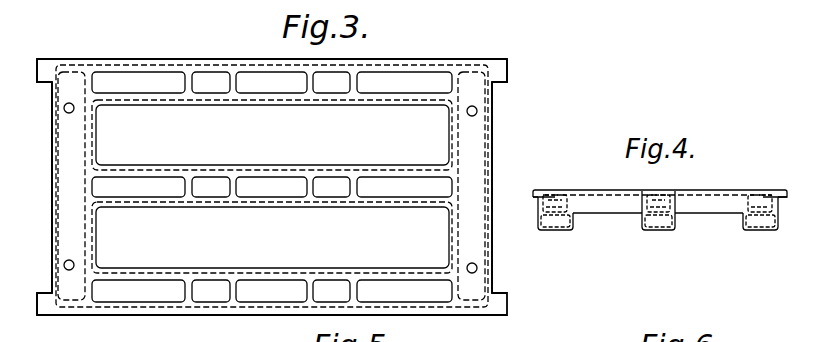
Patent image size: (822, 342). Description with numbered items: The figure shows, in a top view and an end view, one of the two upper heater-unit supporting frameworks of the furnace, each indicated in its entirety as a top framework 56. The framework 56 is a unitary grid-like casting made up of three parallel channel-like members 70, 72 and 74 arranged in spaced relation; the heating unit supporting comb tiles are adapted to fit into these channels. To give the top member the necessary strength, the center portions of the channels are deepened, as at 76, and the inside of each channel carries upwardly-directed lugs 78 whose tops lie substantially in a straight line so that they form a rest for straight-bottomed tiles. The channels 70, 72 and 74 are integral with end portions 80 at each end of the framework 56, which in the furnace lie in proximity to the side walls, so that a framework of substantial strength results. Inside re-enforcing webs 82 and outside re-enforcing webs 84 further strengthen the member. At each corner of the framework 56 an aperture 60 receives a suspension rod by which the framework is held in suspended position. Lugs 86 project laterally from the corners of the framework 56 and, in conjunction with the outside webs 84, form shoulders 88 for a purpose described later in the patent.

In FIG. 3, the top framework 56 is at (545, 118).
In FIG. 3, the apertures 60 is at (63, 107).
In FIG. 4, the channel-like member 70 is at (555, 231).
In FIG. 4, the channel-like member 72 is at (655, 231).
In FIG. 4, the channel-like member 74 is at (760, 231).
In FIG. 3, the deepened center portions 76 is at (293, 190).
In FIG. 3, the upwardly-directed lugs 78 is at (305, 82).
In FIG. 4, the upwardly-directed lugs 78 is at (647, 218).
In FIG. 3, the end portions 80 is at (60, 202).
In FIG. 3, the inside re-enforcing webs 82 is at (90, 139).
In FIG. 3, the outside re-enforcing webs 84 is at (57, 146).
In FIG. 4, the outside re-enforcing webs 84 is at (612, 190).
In FIG. 3, the lugs 86 is at (507, 80).
In FIG. 4, the lugs 86 is at (541, 191).
In FIG. 3, the shoulders 88 is at (58, 248).